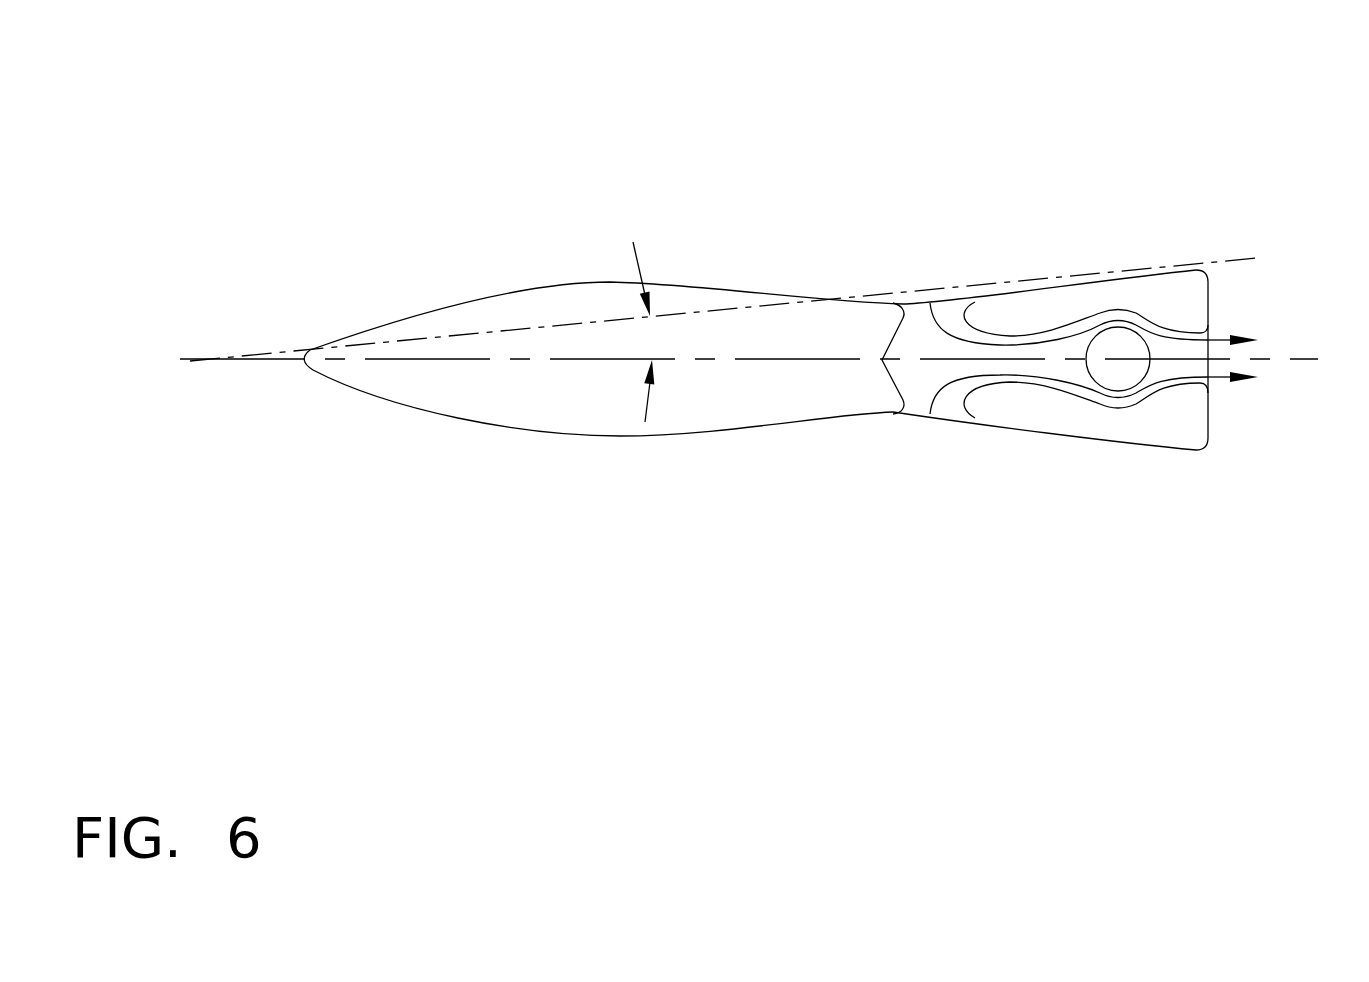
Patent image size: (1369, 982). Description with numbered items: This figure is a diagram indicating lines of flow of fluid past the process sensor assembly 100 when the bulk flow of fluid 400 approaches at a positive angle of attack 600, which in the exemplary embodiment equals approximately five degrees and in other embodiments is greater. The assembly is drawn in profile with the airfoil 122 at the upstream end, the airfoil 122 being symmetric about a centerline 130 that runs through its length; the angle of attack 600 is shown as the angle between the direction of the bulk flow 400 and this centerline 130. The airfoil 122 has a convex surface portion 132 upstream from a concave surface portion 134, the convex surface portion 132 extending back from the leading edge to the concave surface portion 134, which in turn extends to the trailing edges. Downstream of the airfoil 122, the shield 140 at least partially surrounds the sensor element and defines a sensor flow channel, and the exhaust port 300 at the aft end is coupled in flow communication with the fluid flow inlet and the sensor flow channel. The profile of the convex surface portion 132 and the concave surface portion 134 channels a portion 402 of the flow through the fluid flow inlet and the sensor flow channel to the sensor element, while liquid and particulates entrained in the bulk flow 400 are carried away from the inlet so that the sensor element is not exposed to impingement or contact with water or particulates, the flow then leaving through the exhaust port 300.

The process sensor assembly 100 is at (740, 118).
The airfoil 122 is at (347, 382).
The centerline 130 is at (243, 362).
The convex surface portion 132 is at (545, 432).
The concave surface portion 134 is at (803, 423).
The shield 140 is at (1137, 450).
The exhaust port 300 is at (1212, 383).
The bulk flow of fluid 400 is at (512, 246).
The portion of fluid flow 402 is at (947, 400).
The angle of attack 600 is at (650, 405).